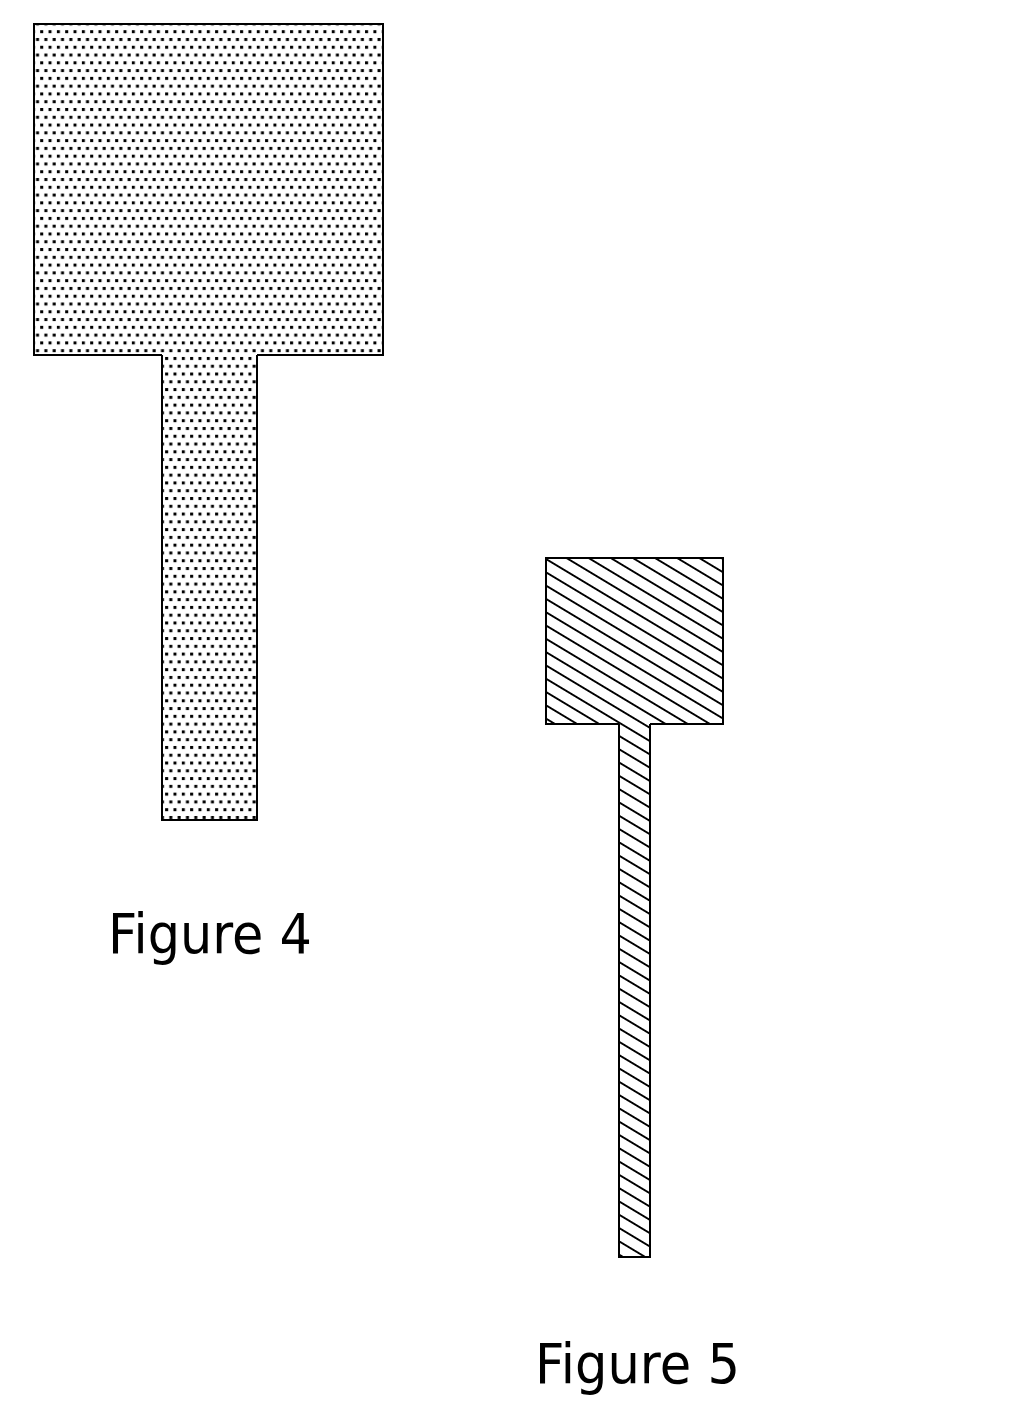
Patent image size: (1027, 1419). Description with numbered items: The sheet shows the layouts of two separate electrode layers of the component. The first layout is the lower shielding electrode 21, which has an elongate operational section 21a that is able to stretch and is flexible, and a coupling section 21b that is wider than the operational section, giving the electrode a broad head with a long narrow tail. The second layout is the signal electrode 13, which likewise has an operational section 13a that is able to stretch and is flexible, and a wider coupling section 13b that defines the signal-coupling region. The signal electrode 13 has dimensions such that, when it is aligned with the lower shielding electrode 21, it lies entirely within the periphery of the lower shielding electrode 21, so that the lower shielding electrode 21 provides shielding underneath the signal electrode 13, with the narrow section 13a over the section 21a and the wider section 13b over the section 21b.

In FIG. 4, the lower shielding electrode 21 is at (387, 422).
In FIG. 4, the operational section 21a is at (321, 587).
In FIG. 4, the coupling section 21b is at (312, 189).
In FIG. 5, the signal electrode 13 is at (735, 907).
In FIG. 5, the operational section 13a is at (732, 990).
In FIG. 5, the coupling section 13b is at (735, 641).